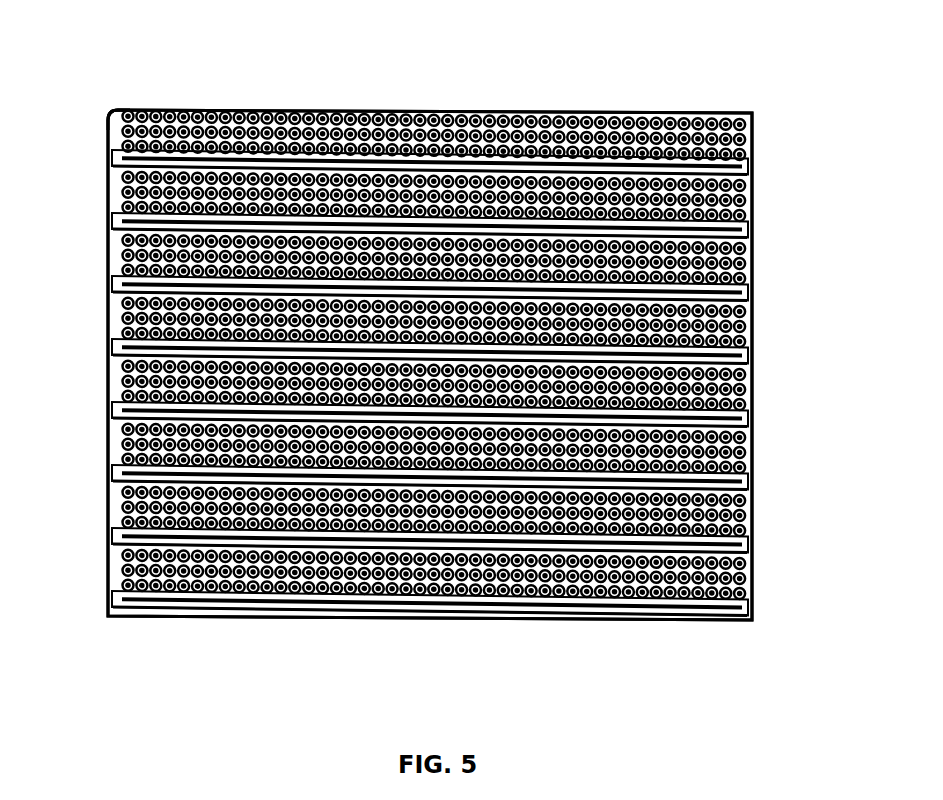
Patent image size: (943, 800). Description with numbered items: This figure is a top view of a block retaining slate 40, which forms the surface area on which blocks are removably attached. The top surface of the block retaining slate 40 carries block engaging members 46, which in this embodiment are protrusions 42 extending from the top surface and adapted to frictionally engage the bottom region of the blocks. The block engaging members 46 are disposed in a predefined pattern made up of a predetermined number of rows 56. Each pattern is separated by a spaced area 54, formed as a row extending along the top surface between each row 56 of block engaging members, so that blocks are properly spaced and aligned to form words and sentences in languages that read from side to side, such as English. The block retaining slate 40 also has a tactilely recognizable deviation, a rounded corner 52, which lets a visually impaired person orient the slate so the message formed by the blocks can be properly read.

The block retaining slate 40 is at (461, 670).
The protrusions 42 is at (245, 108).
The block engaging members 46 is at (388, 96).
The rounded corner 52 is at (117, 108).
The spaced area 54 is at (110, 284).
The rows 56 is at (760, 323).